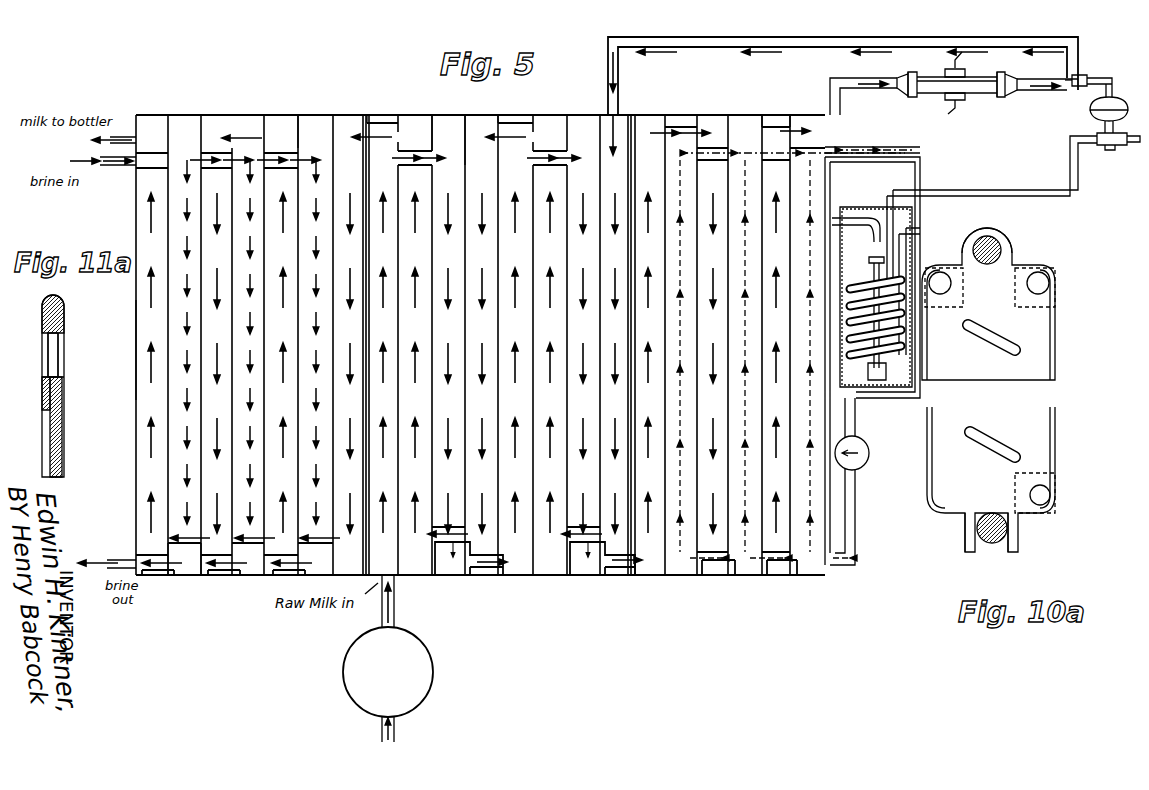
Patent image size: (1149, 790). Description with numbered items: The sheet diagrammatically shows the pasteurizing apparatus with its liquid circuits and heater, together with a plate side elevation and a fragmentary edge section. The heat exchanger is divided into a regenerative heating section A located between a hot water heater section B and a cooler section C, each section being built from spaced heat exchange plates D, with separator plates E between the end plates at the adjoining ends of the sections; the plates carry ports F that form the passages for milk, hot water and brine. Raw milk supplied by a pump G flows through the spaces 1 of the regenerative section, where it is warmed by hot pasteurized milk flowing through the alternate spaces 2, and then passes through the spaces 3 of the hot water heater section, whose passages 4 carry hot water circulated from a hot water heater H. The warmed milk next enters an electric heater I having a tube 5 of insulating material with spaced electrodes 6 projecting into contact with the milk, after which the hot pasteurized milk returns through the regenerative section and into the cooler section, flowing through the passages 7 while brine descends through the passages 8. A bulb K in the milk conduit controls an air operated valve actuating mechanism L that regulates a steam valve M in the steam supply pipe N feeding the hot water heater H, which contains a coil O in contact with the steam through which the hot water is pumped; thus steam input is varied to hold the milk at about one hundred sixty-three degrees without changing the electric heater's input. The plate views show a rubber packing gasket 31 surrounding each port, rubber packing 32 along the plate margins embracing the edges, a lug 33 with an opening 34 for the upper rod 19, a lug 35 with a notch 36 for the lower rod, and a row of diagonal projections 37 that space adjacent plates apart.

In FIG. 5, the regenerative heating section A is at (533, 576).
In FIG. 5, the hot water heater section B is at (752, 578).
In FIG. 5, the cooler section C is at (170, 577).
In FIG. 5, the heat exchange plates D is at (128, 473).
In FIG. 5, the separator plates E is at (366, 115).
In FIG. 5, the ports F is at (393, 115).
In FIG. 10A, the ports F is at (941, 278).
In FIG. 11A, the ports F is at (57, 358).
In FIG. 5, the pump G is at (440, 685).
In FIG. 5, the hot water heater H is at (872, 382).
In FIG. 5, the electric heater I is at (988, 77).
In FIG. 5, the bulb K is at (1082, 75).
In FIG. 5, the air operated valve actuating mechanism L is at (1115, 97).
In FIG. 5, the steam valve M is at (1108, 146).
In FIG. 5, the steam supply pipe N is at (1073, 98).
In FIG. 5, the coil O is at (898, 350).
In FIG. 5, the spaces 1 is at (396, 577).
In FIG. 5, the alternate spaces 2 is at (478, 114).
In FIG. 5, the spaces 3 is at (655, 577).
In FIG. 5, the passages 4 is at (806, 577).
In FIG. 5, the tube 5 is at (920, 76).
In FIG. 5, the electrodes 6 is at (938, 76).
In FIG. 5, the passages 7 is at (338, 114).
In FIG. 5, the passages 8 is at (248, 580).
In FIG. 10A, the rod 19 is at (1000, 253).
In FIG. 10A, the rubber packing gasket 31 is at (938, 276).
In FIG. 11A, the rubber packing gasket 31 is at (46, 360).
In FIG. 10A, the rubber packing 32 is at (1053, 440).
In FIG. 11A, the rubber packing 32 is at (58, 445).
In FIG. 10A, the lug 33 is at (983, 237).
In FIG. 10A, the opening 34 is at (996, 240).
In FIG. 10A, the lug 35 is at (972, 540).
In FIG. 10A, the notch 36 is at (1010, 535).
In FIG. 10A, the projections 37 is at (998, 338).